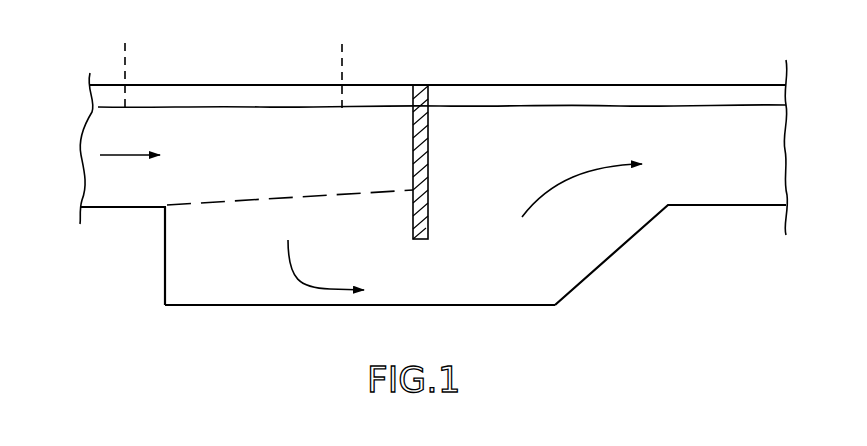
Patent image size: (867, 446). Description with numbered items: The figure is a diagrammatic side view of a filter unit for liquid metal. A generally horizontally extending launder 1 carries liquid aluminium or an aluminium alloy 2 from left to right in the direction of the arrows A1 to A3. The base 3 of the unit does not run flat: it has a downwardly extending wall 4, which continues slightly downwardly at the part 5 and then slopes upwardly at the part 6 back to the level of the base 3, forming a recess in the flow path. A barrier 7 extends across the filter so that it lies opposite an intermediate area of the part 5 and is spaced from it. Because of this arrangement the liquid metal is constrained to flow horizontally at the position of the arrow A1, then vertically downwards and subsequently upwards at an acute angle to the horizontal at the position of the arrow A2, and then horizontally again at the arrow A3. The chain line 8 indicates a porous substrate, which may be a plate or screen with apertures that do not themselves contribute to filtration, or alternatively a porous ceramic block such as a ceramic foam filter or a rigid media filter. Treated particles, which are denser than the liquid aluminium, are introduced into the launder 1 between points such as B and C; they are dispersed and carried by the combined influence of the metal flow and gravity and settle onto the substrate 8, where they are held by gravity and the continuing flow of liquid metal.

The launder 1 is at (240, 85).
The liquid aluminium or aluminium alloy 2 is at (118, 128).
The base 3 is at (122, 208).
The downwardly extending wall 4 is at (163, 267).
The slightly downward continuing part 5 is at (312, 306).
The upwardly sloping part 6 is at (640, 232).
The barrier 7 is at (418, 182).
The porous substrate 8 is at (296, 194).
The arrow A1 is at (125, 157).
The arrow A2 is at (290, 270).
The arrow A3 is at (574, 178).
The point B is at (127, 63).
The point C is at (342, 63).